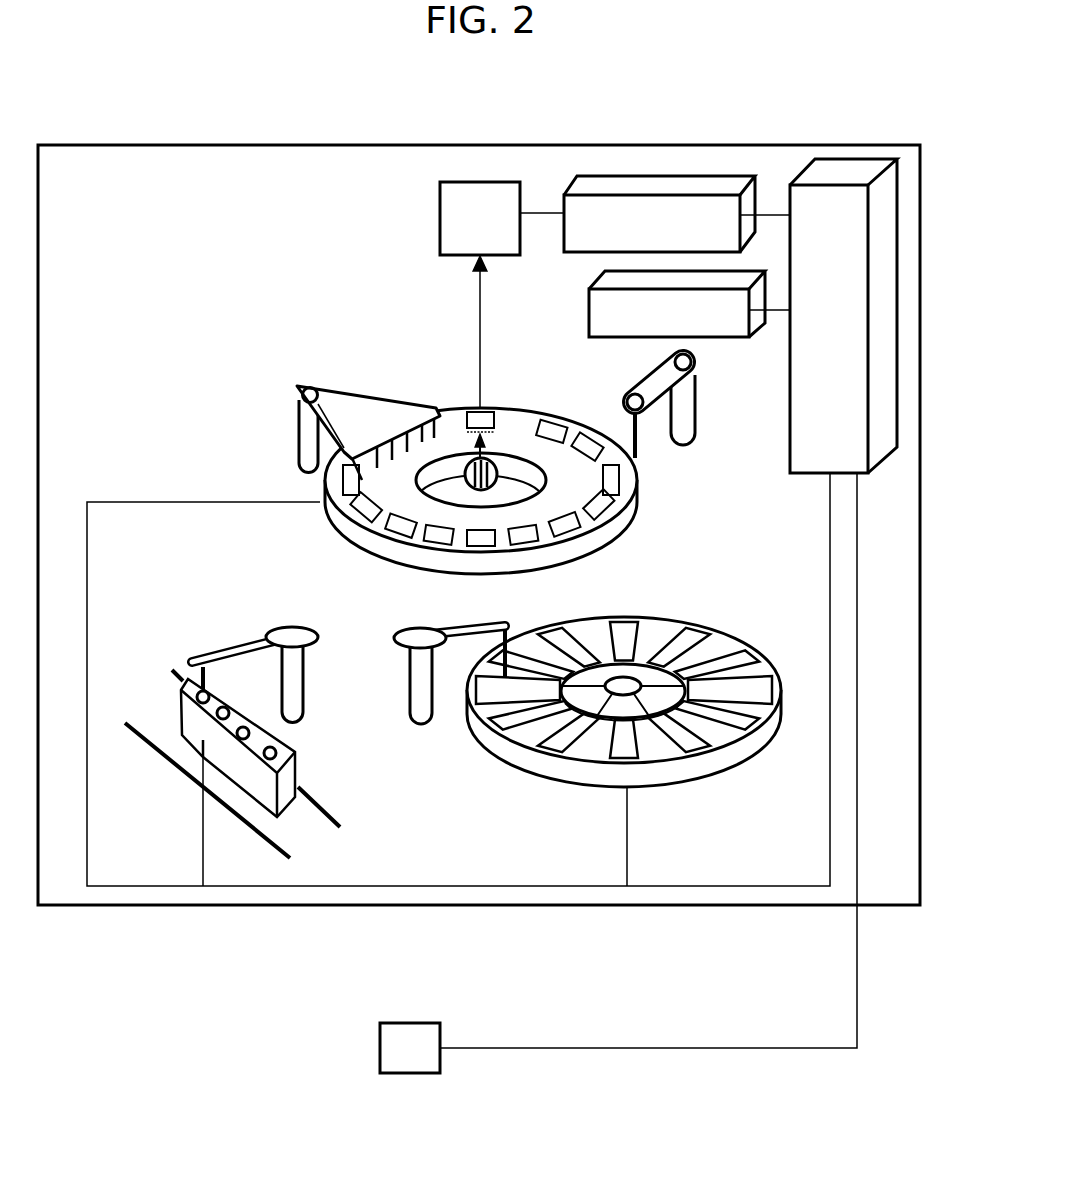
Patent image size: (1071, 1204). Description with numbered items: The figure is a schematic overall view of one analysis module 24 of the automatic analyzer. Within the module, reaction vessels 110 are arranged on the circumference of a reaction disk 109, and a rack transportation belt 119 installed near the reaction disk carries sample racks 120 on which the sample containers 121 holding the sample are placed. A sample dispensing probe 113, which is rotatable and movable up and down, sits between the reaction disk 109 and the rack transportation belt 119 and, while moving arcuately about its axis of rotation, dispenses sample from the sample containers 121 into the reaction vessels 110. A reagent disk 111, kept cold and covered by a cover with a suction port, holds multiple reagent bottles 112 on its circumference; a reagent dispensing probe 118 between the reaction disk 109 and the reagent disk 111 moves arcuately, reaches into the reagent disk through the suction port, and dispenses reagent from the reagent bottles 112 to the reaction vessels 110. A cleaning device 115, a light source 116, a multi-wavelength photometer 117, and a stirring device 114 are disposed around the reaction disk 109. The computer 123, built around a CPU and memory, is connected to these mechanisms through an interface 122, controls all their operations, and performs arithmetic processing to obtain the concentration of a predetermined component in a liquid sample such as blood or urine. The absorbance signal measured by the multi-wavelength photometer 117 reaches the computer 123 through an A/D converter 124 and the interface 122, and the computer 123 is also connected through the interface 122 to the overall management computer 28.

The analysis module 24 is at (127, 148).
The overall management computer 28 is at (380, 1043).
The reaction disk 109 is at (430, 559).
The reaction vessel 110 is at (610, 528).
The reagent disk 111 is at (697, 766).
The reagent bottle 112 is at (528, 734).
The sample dispensing probe 113 is at (280, 632).
The stirring device 114 is at (680, 432).
The cleaning device 115 is at (297, 390).
The light source 116 is at (470, 462).
The multi-wavelength photometer 117 is at (440, 214).
The reagent dispensing probe 118 is at (402, 659).
The rack transportation belt 119 is at (152, 718).
The sample rack 120 is at (290, 776).
The sample container 121 is at (203, 785).
The interface 122 is at (845, 168).
The computer 123 is at (589, 312).
The A/D converter 124 is at (683, 189).